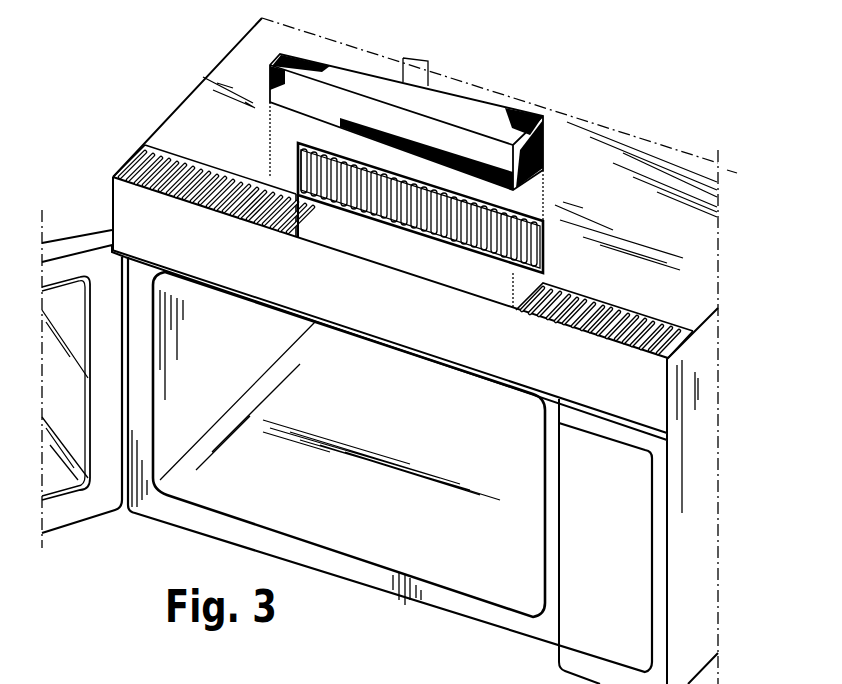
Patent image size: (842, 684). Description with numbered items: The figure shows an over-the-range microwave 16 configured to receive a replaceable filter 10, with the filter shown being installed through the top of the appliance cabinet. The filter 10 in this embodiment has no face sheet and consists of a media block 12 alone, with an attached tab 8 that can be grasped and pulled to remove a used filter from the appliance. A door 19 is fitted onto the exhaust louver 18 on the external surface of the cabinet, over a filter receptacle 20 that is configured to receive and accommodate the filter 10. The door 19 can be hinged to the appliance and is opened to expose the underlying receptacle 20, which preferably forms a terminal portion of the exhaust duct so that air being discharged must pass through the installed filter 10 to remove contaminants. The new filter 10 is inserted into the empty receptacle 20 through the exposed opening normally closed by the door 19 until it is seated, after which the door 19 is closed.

The tab 8 is at (414, 63).
The filter 10 is at (441, 164).
The media block 12 is at (543, 147).
The OTR microwave 16 is at (419, 351).
The louver 18 is at (597, 316).
The door 19 is at (297, 147).
The filter receptacle 20 is at (413, 264).